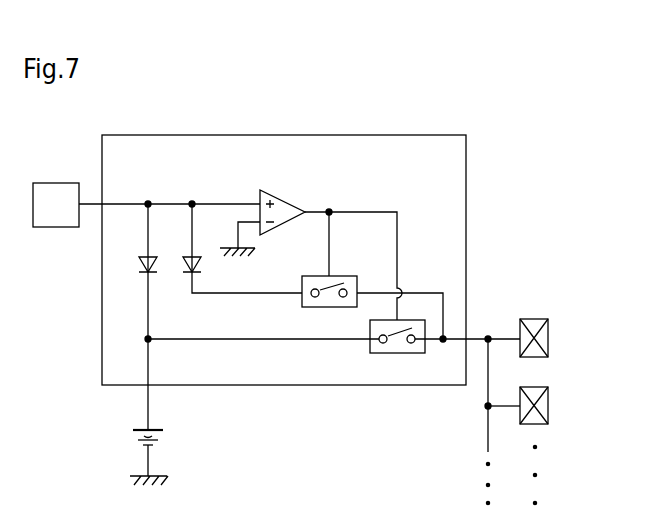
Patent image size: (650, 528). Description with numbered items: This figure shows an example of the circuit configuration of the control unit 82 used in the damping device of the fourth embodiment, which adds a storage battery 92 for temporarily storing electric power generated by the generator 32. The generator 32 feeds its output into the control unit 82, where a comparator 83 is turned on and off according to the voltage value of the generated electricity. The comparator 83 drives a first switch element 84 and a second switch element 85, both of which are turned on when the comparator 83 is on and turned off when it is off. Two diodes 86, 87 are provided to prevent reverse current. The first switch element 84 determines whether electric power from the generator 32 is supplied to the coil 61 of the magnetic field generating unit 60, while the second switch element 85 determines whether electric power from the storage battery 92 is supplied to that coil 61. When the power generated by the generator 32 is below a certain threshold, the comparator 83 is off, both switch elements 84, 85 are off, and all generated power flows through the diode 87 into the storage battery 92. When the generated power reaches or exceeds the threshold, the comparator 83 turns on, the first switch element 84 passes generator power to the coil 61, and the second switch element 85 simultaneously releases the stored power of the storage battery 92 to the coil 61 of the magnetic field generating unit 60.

The control unit 82 is at (333, 135).
The generator 32 is at (65, 183).
The comparator 83 is at (300, 187).
The first switch element 84 is at (350, 276).
The second switch element 85 is at (412, 354).
The diode 86 is at (187, 254).
The diode 87 is at (143, 254).
The magnetic field generating unit 60 is at (553, 286).
The coil 61 is at (548, 323).
The storage battery 92 is at (124, 431).